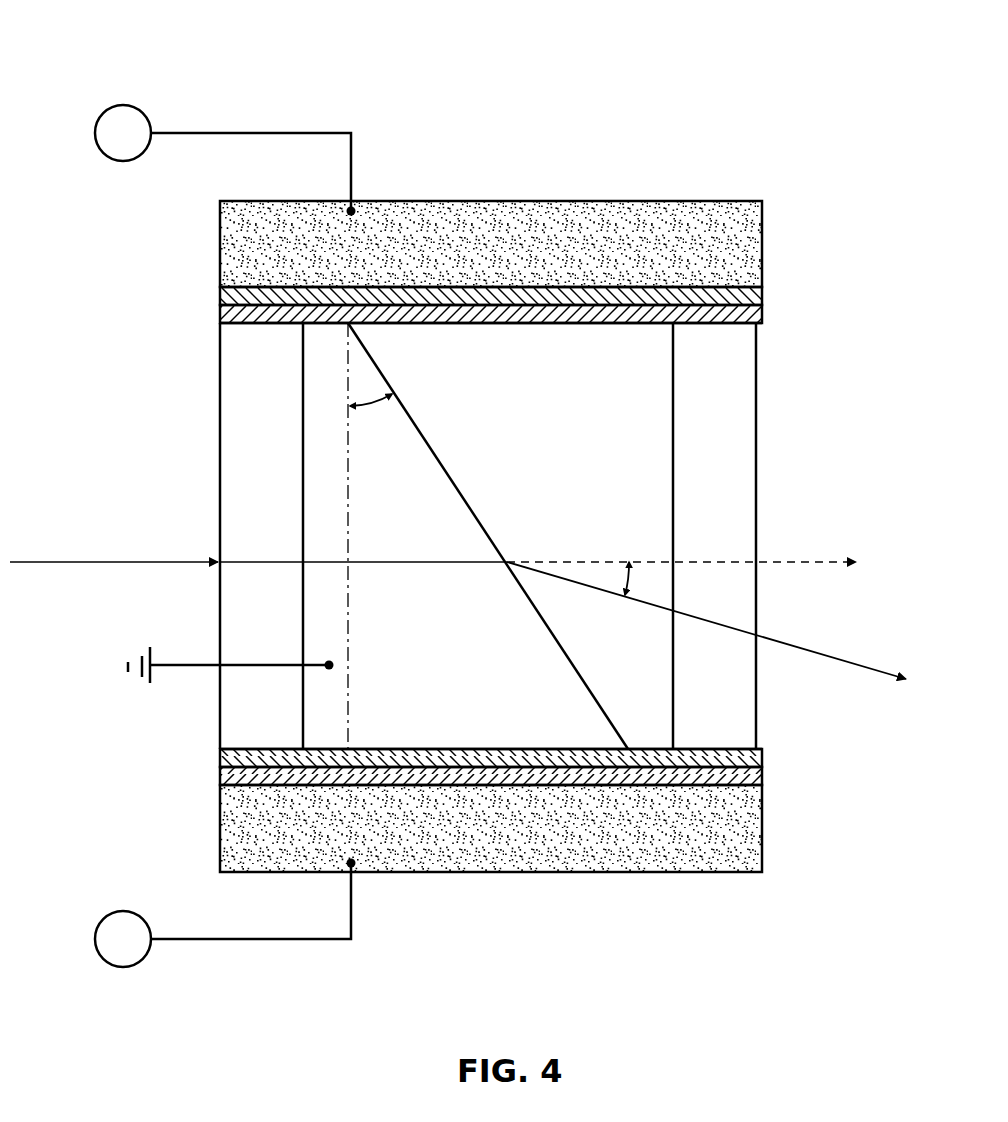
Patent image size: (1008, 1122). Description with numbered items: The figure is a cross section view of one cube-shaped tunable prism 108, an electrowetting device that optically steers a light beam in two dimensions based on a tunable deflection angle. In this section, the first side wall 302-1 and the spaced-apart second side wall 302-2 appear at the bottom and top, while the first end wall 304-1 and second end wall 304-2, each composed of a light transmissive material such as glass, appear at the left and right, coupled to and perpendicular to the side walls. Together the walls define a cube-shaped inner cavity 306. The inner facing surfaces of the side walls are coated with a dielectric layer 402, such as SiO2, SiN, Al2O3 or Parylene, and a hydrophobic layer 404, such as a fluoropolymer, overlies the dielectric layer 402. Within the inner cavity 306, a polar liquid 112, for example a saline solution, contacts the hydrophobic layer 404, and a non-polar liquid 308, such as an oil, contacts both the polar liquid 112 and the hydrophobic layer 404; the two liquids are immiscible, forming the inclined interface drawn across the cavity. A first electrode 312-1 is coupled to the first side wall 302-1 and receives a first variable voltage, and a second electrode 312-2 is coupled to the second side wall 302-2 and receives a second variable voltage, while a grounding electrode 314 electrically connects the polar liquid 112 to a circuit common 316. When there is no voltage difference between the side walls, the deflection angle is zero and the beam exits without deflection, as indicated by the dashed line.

The cube-shaped tunable prism 108 is at (163, 46).
The polar liquid 112 is at (488, 536).
The first side wall 302-1 is at (548, 863).
The second side wall 302-2 is at (637, 212).
The first end wall 304-1 is at (219, 457).
The second end wall 304-2 is at (757, 457).
The cube-shaped inner cavity 306 is at (578, 438).
The non-polar liquid 308 is at (563, 587).
The first electrode 312-1 is at (354, 900).
The second electrode 312-2 is at (354, 143).
The grounding electrode 314 is at (196, 663).
The circuit common 316 is at (142, 656).
The dielectric layer 402 is at (763, 776).
The hydrophobic layer 404 is at (763, 758).